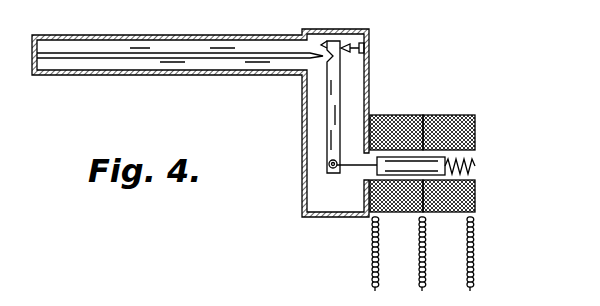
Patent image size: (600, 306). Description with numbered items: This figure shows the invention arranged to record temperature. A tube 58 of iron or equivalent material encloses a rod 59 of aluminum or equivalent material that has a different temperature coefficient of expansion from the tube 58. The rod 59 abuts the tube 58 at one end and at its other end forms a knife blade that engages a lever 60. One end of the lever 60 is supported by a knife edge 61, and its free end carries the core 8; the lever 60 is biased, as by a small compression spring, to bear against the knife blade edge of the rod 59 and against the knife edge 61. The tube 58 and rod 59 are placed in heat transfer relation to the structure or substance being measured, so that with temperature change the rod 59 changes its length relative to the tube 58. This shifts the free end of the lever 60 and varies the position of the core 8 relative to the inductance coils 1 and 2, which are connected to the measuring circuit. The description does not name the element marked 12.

The inductance coil 1 is at (442, 115).
The inductance coil 2 is at (388, 115).
The core 8 is at (473, 176).
The pivot link rod 12 is at (347, 173).
The tube 58 is at (70, 75).
The rod 59 is at (142, 58).
The lever 60 is at (338, 80).
The knife edge 61 is at (347, 40).